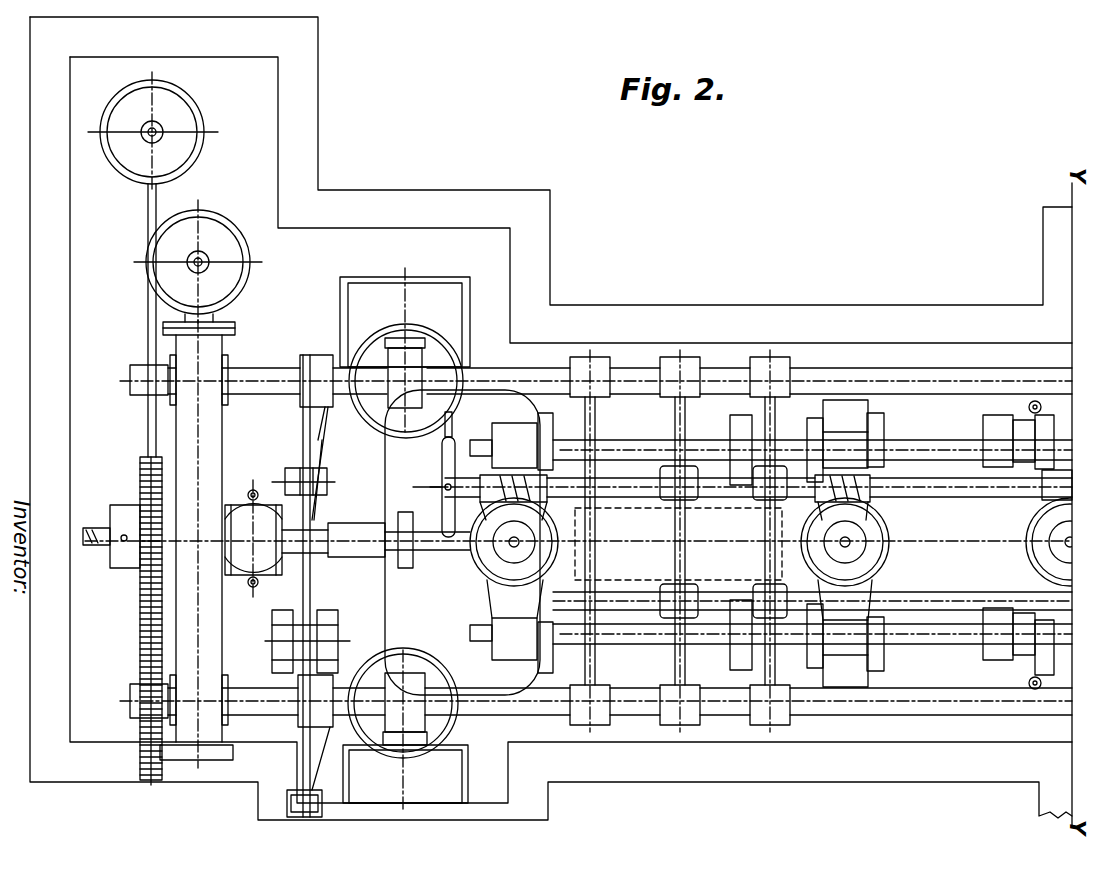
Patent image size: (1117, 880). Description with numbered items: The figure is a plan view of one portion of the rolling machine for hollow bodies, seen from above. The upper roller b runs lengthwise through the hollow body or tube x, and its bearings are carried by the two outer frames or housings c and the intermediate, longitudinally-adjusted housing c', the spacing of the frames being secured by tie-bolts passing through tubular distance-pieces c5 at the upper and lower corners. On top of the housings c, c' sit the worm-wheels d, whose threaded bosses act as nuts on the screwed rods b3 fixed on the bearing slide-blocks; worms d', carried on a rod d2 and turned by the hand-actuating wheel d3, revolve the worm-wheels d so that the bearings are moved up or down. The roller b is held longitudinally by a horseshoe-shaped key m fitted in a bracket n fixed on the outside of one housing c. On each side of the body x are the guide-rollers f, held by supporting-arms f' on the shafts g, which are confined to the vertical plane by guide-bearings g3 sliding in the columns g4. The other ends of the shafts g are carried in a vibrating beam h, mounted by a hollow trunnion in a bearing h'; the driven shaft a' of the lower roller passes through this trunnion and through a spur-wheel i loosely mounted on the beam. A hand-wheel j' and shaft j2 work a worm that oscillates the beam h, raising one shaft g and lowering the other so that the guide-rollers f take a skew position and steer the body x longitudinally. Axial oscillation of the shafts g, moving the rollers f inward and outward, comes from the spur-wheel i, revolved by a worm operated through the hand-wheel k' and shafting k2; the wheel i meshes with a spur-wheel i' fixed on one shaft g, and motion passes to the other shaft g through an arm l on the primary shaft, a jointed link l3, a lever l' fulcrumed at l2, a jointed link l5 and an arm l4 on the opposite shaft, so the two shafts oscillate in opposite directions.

The hand-wheel k' is at (149, 132).
The shafting k2 is at (150, 288).
The hand-wheel j' is at (202, 262).
The shaft j2 is at (203, 273).
The vibrating beam h is at (167, 541).
The shafts g is at (272, 372).
The columns g4 is at (421, 540).
The guide-bearings g3 is at (405, 541).
The spur-wheel i is at (138, 618).
The spur-wheel i' is at (130, 621).
The driven shaft a' is at (111, 534).
The bearing h' is at (253, 549).
The upper roller b is at (974, 553).
The arm l is at (298, 586).
The arm l4 is at (299, 424).
The lever l' is at (329, 481).
The jointed link l5 is at (292, 470).
The fulcrum l2 is at (292, 641).
The jointed link l3 is at (317, 810).
The bracket n is at (462, 542).
The hand-actuating wheel d3 is at (437, 474).
The horseshoe-shaped key m is at (441, 487).
The worm-wheels d is at (767, 554).
The screwed rods b3 is at (773, 560).
The outer frames or housings c is at (782, 552).
The intermediate housing or frame c' is at (836, 543).
The worms d' is at (790, 475).
The rod d2 is at (751, 536).
The tubular distance-pieces c5 is at (812, 542).
The supporting-arms f' is at (680, 545).
The guide-rollers f is at (705, 542).
The hollow body or tube x is at (678, 542).